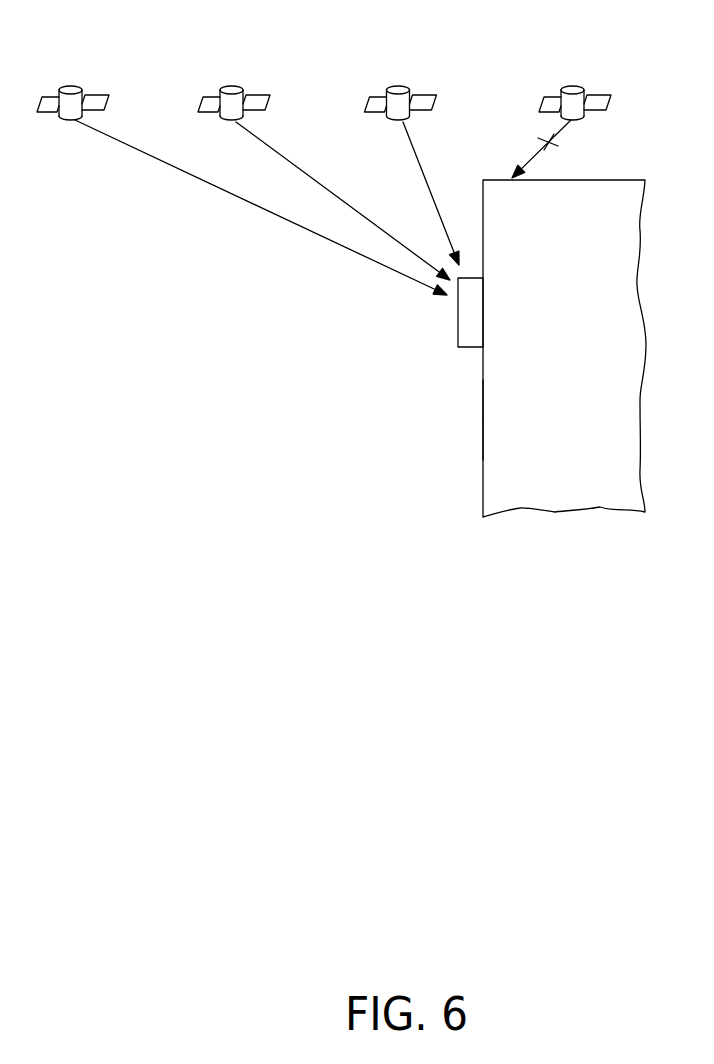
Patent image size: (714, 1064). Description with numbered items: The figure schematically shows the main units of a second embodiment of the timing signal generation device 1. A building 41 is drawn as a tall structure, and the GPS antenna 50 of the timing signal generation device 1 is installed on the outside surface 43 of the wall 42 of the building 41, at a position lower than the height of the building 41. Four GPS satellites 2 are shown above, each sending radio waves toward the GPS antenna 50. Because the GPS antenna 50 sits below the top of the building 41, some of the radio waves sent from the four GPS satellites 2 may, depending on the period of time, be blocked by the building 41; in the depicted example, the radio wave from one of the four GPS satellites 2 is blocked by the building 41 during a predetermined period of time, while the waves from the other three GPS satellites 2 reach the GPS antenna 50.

The GPS satellite 2 is at (74, 86).
The building 41 is at (614, 198).
The GPS antenna 50 is at (468, 310).
The timing signal generation device 1 is at (420, 329).
The wall 42 is at (481, 398).
The outside surface 43 is at (481, 435).